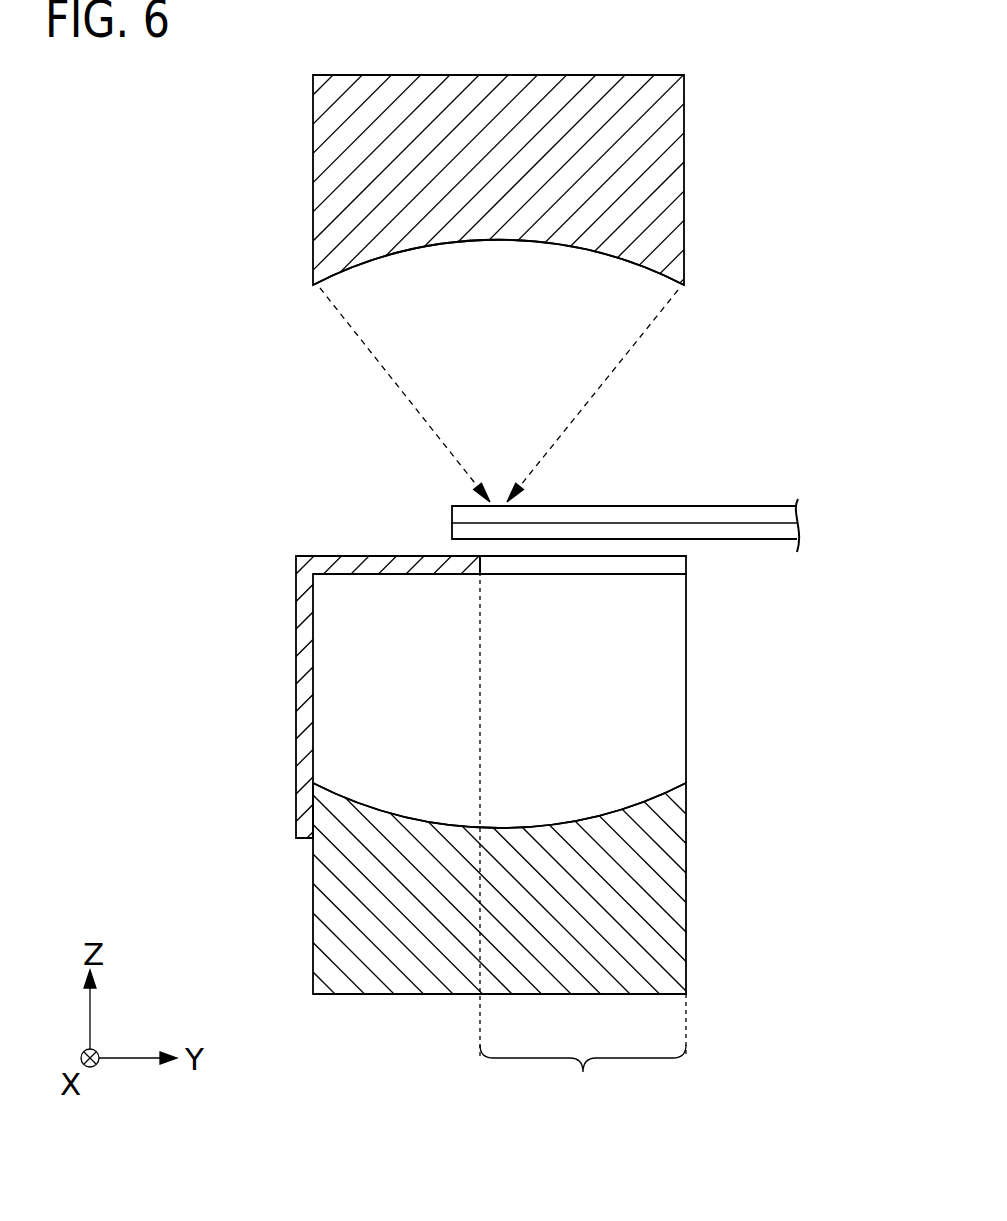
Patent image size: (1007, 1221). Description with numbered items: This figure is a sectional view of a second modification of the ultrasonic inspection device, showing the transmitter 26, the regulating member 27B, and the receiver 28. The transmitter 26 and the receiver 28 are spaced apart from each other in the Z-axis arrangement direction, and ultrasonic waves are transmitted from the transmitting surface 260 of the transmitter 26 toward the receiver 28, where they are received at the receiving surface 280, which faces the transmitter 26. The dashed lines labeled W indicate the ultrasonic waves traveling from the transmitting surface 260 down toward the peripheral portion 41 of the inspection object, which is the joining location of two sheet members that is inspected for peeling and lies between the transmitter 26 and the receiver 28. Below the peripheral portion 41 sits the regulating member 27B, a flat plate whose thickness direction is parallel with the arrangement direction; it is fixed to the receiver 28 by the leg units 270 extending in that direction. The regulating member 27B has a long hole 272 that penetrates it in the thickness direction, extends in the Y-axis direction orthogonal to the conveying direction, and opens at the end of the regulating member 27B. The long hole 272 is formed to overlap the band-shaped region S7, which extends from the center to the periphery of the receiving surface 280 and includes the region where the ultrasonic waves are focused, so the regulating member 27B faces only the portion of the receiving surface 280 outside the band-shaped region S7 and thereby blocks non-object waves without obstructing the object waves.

The transmitter 26 is at (313, 170).
The transmitting surface 260 is at (440, 247).
The pressing force / load direction W is at (499, 395).
The peripheral portion 41 is at (628, 506).
The leg unit 270 is at (296, 680).
The regulating member 27B is at (385, 575).
The long hole 272 is at (583, 575).
The receiver 28 is at (313, 930).
The receiving surface 280 is at (392, 812).
The band-shaped region S7 is at (583, 1052).